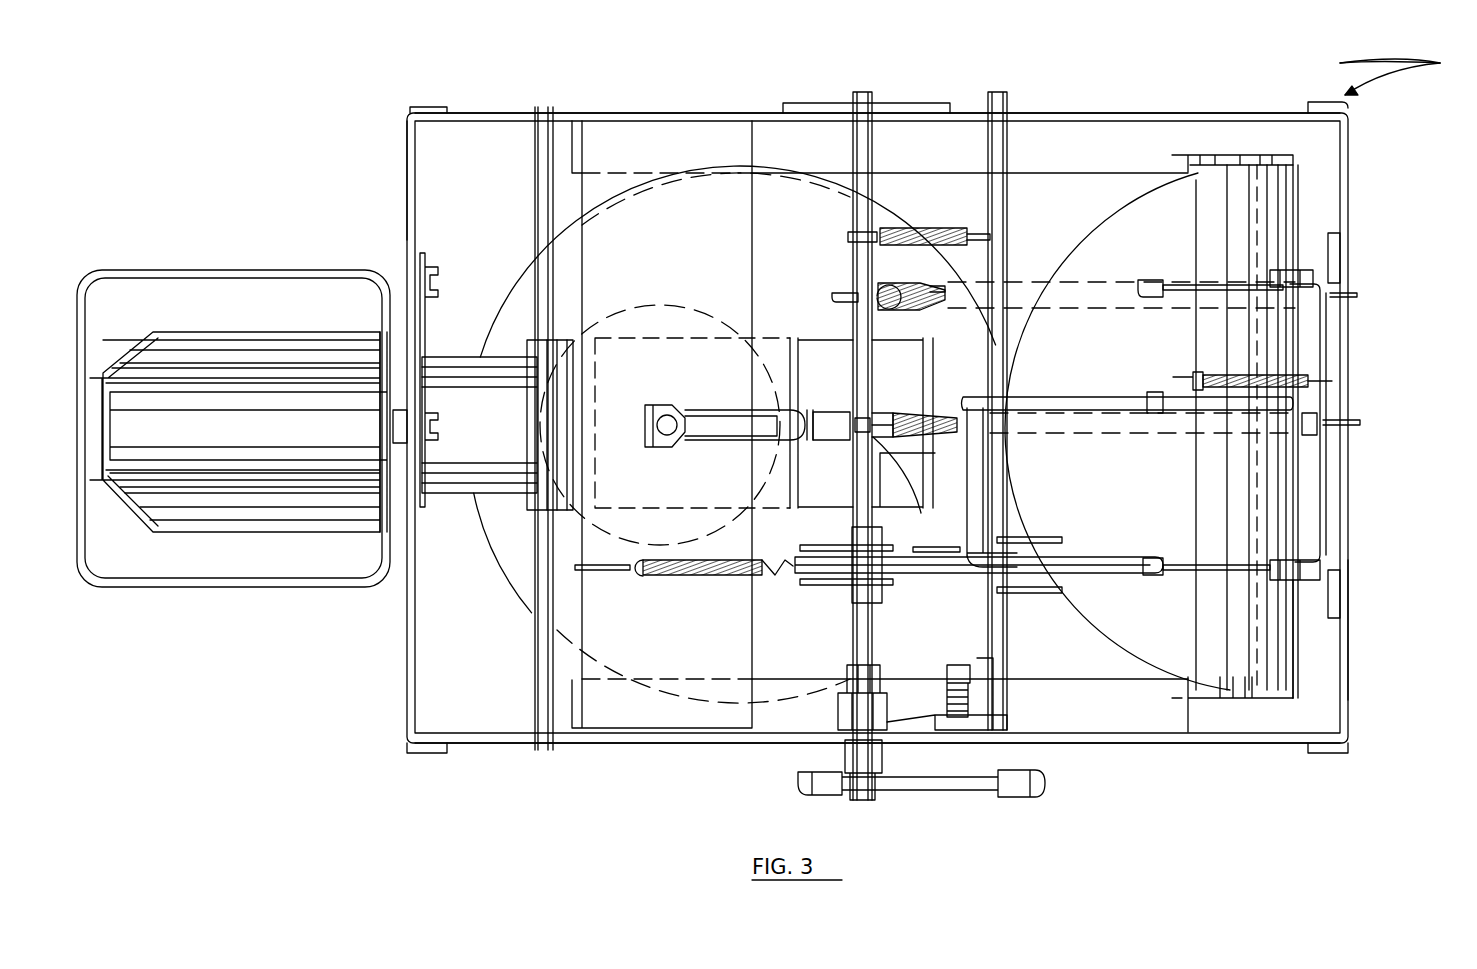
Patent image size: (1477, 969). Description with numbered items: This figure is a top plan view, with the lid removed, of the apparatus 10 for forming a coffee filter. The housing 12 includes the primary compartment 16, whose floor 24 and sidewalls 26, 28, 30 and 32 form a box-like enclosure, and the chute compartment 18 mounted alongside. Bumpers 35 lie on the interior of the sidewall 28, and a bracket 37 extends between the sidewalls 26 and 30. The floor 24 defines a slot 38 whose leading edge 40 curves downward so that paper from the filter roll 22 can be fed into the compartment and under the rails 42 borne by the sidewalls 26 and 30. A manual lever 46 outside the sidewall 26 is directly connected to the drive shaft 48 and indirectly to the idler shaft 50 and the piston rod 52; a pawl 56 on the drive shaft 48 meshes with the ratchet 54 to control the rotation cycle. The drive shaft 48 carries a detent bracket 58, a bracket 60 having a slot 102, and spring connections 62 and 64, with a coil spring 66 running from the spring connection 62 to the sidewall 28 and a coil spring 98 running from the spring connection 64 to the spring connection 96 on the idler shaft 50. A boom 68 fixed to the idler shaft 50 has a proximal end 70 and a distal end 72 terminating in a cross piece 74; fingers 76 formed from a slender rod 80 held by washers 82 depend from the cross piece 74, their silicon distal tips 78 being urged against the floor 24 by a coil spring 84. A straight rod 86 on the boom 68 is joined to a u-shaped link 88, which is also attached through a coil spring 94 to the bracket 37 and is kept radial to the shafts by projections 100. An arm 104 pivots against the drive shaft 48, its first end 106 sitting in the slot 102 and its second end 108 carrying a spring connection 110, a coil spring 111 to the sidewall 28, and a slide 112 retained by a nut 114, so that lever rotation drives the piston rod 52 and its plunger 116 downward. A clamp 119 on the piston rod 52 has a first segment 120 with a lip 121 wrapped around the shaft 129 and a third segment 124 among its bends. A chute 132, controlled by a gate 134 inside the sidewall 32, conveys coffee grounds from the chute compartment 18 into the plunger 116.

The apparatus for forming a coffee filter 10 is at (1405, 75).
The housing 12 is at (1348, 138).
The primary compartment 16 is at (1340, 180).
The chute compartment 18 is at (280, 270).
The filter roll 22 is at (1293, 218).
The floor 24 is at (1095, 210).
The sidewall 26 is at (1255, 740).
The sidewall 28 is at (1348, 615).
The sidewall 30 is at (1130, 110).
The sidewall 32 is at (412, 145).
The bumpers 35 is at (1338, 253).
The bracket 37 is at (663, 135).
The slot 38 is at (1320, 680).
The leading edge 40 is at (1295, 637).
The rails 42 is at (1085, 128).
The manual lever 46 is at (935, 785).
The drive shaft 48 is at (873, 135).
The idler shaft 50 is at (1010, 120).
The piston rod 52 is at (668, 432).
The ratchet 54 is at (855, 735).
The pawl 56 is at (920, 735).
The detent bracket 58 is at (868, 568).
The bracket 60 is at (933, 412).
The spring connection 62 is at (840, 293).
The spring connection 64 is at (850, 235).
The coil spring 66 is at (925, 283).
The boom 68 is at (1060, 400).
The proximal end 70 is at (985, 400).
The distal end 72 is at (1302, 395).
The cross piece 74 is at (1293, 450).
The fingers 76 is at (1210, 287).
The distal tip 78 is at (1150, 280).
The slender rod 80 is at (1323, 330).
The washer 82 is at (1320, 565).
The coil spring 84 is at (1300, 378).
The straight rod 86 is at (977, 460).
The u-shaped link 88 is at (1085, 565).
The coil spring 94 is at (680, 575).
The spring connection 96 is at (990, 230).
The coil spring 98 is at (905, 228).
The projections 100 is at (832, 552).
The slot 102 is at (905, 412).
The arm 104 is at (848, 432).
The first end 106 is at (915, 487).
The second end 108 is at (812, 408).
The spring connection 110 is at (885, 400).
The coil spring 111 is at (915, 440).
The slide 112 is at (725, 410).
The nut 114 is at (660, 408).
The plunger 116 is at (680, 306).
The clamp 119 is at (775, 505).
The first segment 120 is at (765, 338).
The lip 121 is at (557, 337).
The third segment 124 is at (842, 370).
The shaft 129 is at (553, 115).
The chute 132 is at (497, 434).
The gate 134 is at (415, 337).